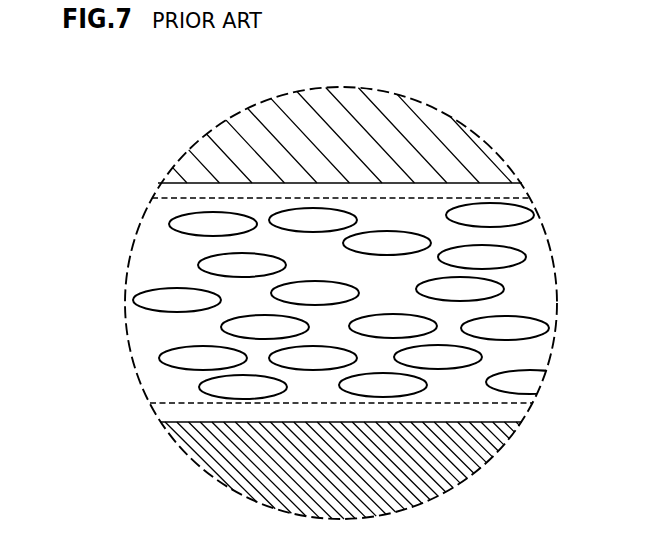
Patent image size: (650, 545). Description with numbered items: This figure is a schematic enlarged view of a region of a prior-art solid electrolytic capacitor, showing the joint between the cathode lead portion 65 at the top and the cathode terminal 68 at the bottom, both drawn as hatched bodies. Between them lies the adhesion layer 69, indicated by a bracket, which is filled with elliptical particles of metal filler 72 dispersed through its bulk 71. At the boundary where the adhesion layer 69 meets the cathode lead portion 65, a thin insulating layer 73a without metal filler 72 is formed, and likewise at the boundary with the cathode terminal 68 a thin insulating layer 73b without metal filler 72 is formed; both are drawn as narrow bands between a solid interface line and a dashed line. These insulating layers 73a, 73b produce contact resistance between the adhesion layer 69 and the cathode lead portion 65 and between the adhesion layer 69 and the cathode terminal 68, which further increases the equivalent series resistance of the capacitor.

The cathode lead portion 65 is at (463, 138).
The cathode terminal 68 is at (463, 465).
The adhesion layer 69 is at (580, 181).
The intermediate layer 71 is at (142, 268).
The metal filler 72 is at (155, 303).
The insulating layer 73a is at (170, 190).
The insulating layer 73b is at (165, 412).